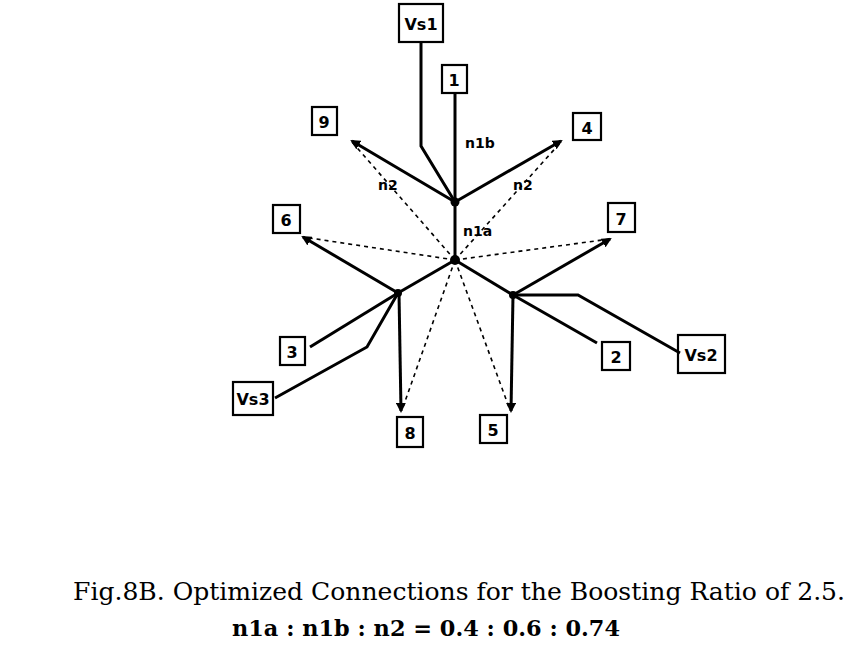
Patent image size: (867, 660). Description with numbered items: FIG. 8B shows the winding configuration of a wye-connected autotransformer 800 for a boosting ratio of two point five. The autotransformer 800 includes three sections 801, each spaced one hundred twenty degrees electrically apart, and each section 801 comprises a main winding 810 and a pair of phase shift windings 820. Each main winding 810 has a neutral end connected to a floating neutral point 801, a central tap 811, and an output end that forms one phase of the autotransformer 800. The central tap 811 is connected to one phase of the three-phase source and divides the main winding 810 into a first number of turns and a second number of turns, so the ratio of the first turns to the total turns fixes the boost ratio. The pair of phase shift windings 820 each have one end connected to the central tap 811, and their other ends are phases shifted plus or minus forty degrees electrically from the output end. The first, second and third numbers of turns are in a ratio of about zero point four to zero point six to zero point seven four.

The wye-connected autotransformer 800 is at (100, 491).
The section 801 is at (548, 87).
The main winding 810 is at (465, 106).
The central tap 811 is at (396, 257).
The phase shift windings 820 is at (366, 149).